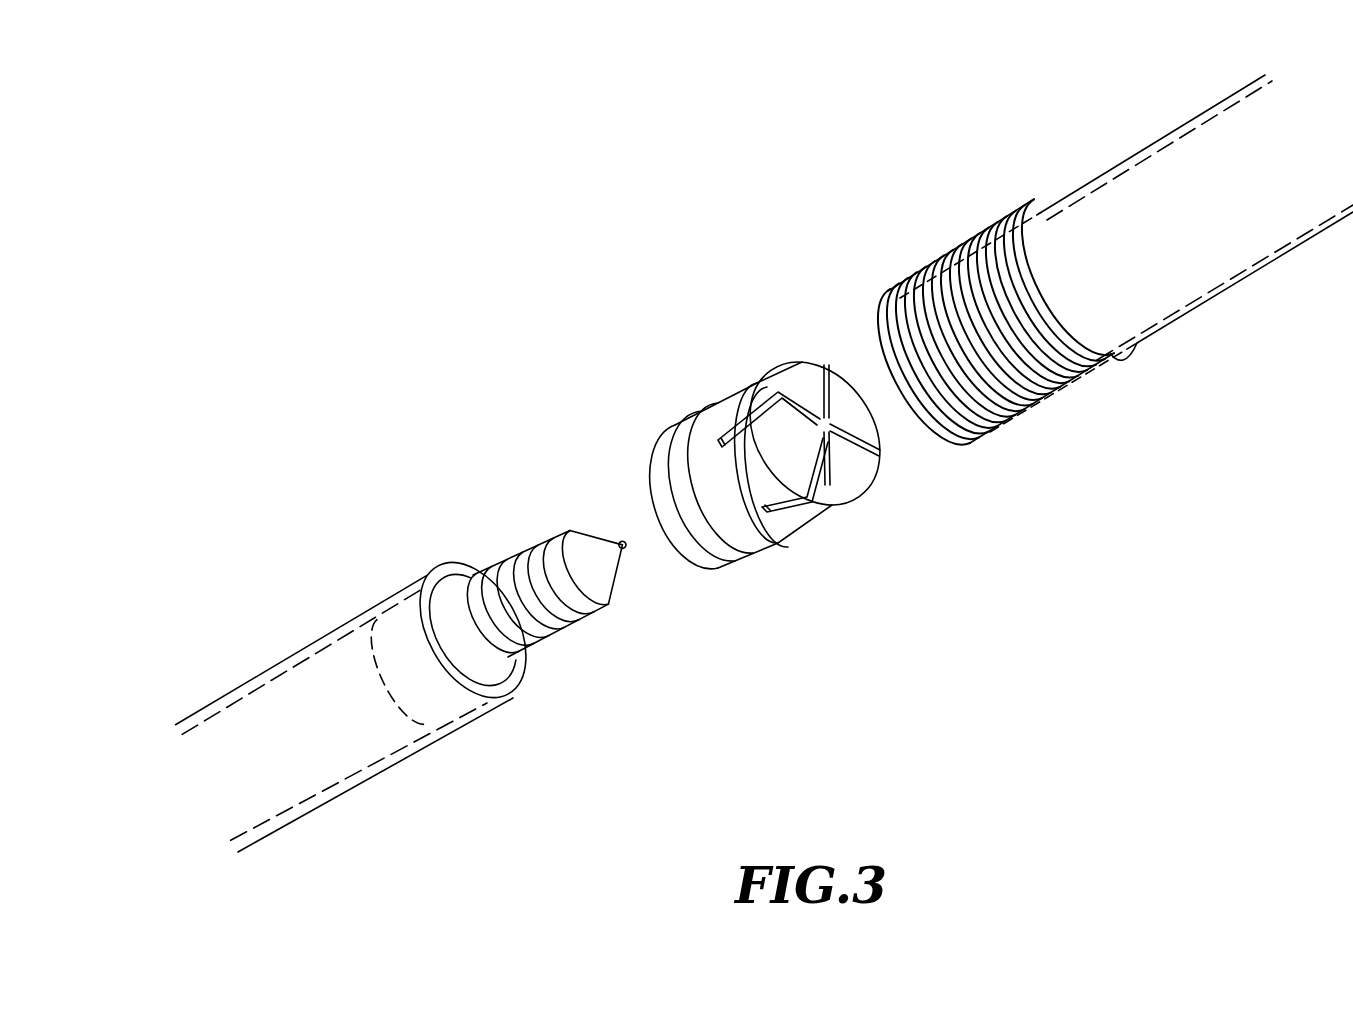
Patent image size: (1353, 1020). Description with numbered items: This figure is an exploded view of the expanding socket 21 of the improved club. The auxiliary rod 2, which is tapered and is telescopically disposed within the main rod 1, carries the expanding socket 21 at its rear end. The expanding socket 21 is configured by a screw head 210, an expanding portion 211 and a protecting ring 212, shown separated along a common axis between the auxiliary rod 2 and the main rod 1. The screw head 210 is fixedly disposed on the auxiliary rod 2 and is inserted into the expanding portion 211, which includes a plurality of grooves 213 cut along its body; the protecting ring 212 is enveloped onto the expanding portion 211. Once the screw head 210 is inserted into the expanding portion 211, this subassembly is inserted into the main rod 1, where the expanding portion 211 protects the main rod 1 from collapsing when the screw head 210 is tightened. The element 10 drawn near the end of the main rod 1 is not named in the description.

The main rod 1 is at (1088, 158).
The auxiliary rod 2 is at (288, 657).
The coil spring 10 is at (1033, 410).
The expanding socket 21 is at (783, 270).
The screw head 210 is at (513, 570).
The expanding portion 211 is at (693, 455).
The protecting ring 212 is at (675, 462).
The grooves 213 is at (832, 458).